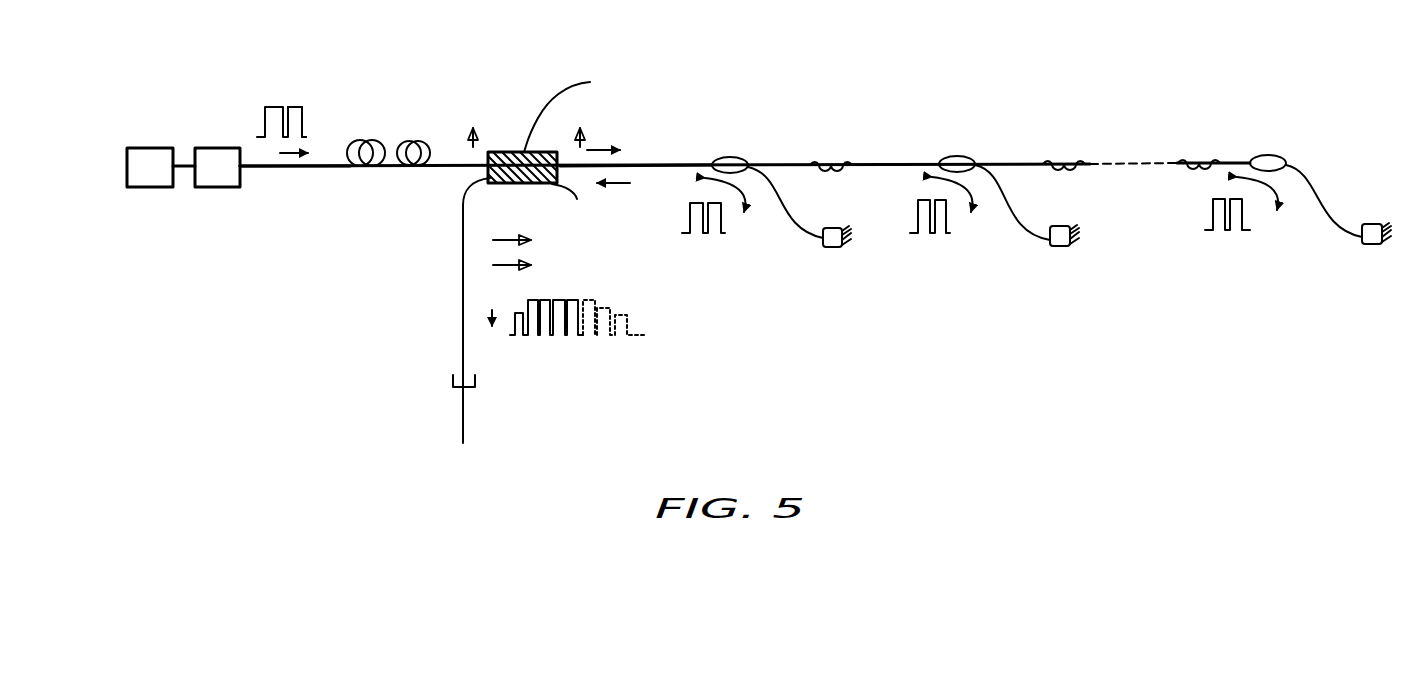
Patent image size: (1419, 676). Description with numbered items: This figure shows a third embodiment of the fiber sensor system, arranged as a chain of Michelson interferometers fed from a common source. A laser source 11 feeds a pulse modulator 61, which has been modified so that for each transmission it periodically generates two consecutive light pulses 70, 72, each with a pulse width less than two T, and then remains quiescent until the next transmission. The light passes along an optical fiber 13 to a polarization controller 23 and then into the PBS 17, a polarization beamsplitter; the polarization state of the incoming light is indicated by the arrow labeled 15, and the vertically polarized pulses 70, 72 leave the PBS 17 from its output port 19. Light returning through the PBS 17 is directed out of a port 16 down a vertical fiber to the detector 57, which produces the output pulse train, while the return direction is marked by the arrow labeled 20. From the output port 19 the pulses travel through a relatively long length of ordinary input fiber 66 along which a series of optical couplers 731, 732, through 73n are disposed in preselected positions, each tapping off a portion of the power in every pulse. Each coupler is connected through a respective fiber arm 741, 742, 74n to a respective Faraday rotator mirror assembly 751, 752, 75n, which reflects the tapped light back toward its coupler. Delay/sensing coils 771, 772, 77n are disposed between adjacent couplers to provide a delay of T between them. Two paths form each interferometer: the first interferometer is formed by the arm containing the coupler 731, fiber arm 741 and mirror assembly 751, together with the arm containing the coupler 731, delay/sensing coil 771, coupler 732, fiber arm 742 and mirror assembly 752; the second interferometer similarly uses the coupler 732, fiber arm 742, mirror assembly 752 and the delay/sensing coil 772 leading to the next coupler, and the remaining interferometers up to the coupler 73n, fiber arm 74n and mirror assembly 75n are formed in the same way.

The laser source 11 is at (152, 174).
The pulse modulator 61 is at (202, 157).
The light pulse 70 is at (264, 106).
The light pulse 72 is at (303, 108).
The optical fiber 13 is at (282, 168).
The polarization controller 23 is at (374, 141).
The input polarization state 15 is at (486, 152).
The output port 19 is at (554, 152).
The PBS 17 is at (610, 141).
The reflected output port 16 is at (484, 184).
The return port 20 is at (549, 184).
The input fiber 66 is at (645, 165).
The detector 57 is at (453, 380).
The optical coupler 731 is at (730, 157).
The fiber arm 741 is at (788, 242).
The Faraday rotator mirror assembly 751 is at (819, 251).
The delay/sensing coil 771 is at (845, 159).
The optical coupler 732 is at (955, 156).
The fiber arm 742 is at (1008, 226).
The Faraday rotator mirror assembly 752 is at (1057, 250).
The delay/sensing coil 772 is at (1080, 158).
The optical coupler 73n is at (1274, 155).
The fiber arm 74n is at (1313, 221).
The Faraday rotator mirror assembly 75n is at (1364, 250).
The delay/sensing coil 77n is at (1216, 157).